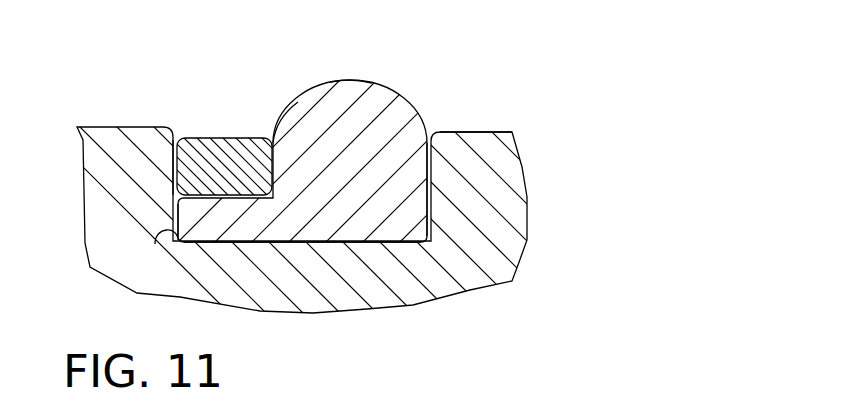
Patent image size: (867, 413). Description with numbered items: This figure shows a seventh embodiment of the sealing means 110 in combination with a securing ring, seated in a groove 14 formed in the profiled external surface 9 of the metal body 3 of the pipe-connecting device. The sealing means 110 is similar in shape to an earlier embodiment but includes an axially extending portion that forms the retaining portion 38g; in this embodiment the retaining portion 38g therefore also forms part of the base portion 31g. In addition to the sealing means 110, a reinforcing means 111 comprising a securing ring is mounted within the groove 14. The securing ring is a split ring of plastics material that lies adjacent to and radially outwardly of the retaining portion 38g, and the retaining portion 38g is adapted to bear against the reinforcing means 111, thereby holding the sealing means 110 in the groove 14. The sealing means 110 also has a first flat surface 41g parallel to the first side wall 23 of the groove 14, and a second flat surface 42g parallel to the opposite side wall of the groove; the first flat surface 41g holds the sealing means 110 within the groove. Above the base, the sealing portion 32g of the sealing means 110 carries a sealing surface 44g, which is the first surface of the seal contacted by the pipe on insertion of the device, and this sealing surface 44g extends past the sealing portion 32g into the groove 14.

The body 3 is at (506, 179).
The profiled external surface 9 is at (480, 132).
The groove 14 is at (155, 244).
The first side wall 23 is at (173, 169).
The base portion 31g is at (343, 216).
The sealing portion 32g is at (354, 118).
The retaining portion 38g is at (237, 229).
The first flat surface 41g is at (180, 212).
The second flat surface 42g is at (431, 215).
The sealing surface 44g is at (298, 102).
The sealing means 110 is at (377, 143).
The reinforcing means 111 is at (227, 163).